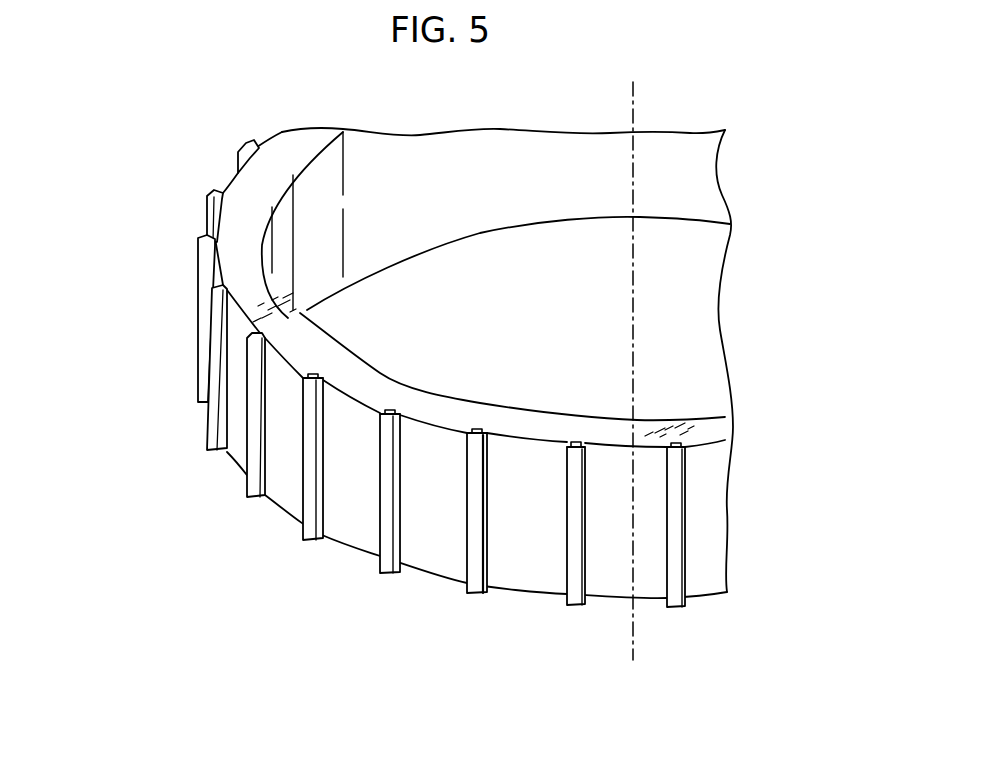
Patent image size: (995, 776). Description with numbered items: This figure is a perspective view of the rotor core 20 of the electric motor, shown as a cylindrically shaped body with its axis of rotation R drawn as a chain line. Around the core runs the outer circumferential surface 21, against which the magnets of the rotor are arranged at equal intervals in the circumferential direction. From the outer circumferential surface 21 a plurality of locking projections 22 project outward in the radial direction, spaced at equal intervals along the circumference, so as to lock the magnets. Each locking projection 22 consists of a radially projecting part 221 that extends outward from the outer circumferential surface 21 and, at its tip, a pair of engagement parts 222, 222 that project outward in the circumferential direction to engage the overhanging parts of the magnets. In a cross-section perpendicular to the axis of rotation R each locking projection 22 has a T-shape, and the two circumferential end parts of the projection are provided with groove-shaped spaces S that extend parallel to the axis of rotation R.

The rotor core 20 is at (134, 116).
The outer circumferential surface 21 is at (437, 470).
The locking projection 22 is at (385, 554).
The radially projecting part 221 is at (483, 430).
The engagement part 222 is at (476, 430).
The groove-shaped space S is at (463, 543).
The axis of rotation R is at (633, 85).